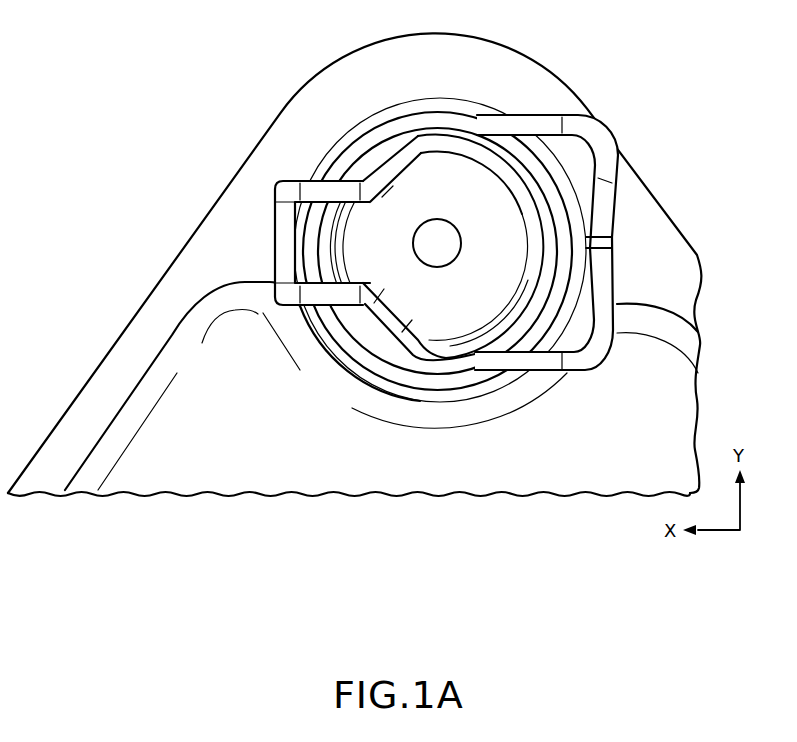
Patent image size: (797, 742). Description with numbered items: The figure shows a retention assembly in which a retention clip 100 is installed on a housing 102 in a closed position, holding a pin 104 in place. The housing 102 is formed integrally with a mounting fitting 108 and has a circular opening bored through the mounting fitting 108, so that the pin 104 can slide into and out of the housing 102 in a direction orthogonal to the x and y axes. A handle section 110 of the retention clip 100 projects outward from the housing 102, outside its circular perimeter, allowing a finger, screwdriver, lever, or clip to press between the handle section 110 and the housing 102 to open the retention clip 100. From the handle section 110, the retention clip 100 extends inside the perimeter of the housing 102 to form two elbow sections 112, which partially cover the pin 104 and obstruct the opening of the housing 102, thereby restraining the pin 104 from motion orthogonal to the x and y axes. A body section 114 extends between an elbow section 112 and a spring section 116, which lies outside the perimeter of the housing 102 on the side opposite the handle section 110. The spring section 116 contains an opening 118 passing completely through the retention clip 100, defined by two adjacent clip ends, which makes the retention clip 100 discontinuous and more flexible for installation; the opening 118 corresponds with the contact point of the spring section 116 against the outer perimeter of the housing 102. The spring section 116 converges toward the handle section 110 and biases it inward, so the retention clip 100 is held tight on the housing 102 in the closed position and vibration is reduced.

The retention clip 100 is at (282, 220).
The housing 102 is at (365, 135).
The pin 104 is at (375, 247).
The mounting fitting 108 is at (362, 83).
The handle section 110 is at (280, 290).
The elbow sections 112 is at (413, 150).
The body section 114 is at (525, 118).
The spring section 116 is at (602, 198).
The opening 118 is at (602, 250).